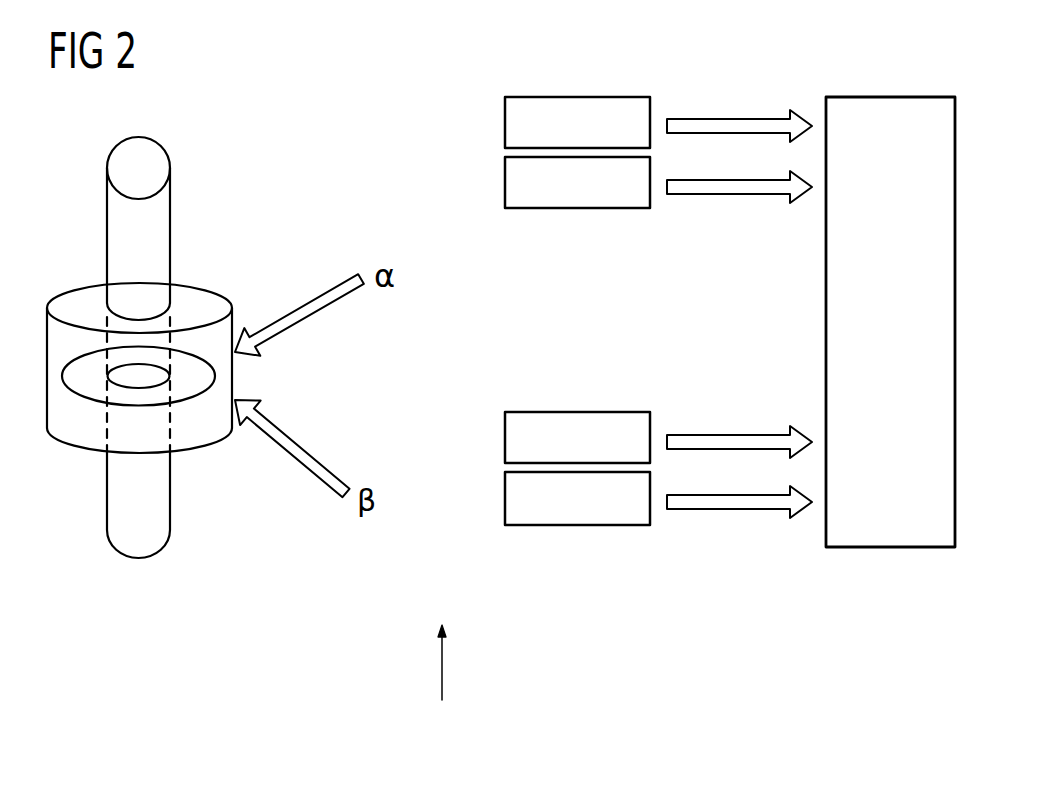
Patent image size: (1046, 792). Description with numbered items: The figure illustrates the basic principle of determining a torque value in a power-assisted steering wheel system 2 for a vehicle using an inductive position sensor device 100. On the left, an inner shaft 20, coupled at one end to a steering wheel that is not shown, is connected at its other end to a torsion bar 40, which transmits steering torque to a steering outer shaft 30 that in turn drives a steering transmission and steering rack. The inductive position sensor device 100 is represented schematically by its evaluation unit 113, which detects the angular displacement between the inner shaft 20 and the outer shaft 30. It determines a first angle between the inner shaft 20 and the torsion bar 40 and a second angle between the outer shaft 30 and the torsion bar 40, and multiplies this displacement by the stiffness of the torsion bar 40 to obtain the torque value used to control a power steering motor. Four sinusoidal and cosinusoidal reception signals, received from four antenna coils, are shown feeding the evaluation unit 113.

The inner shaft 20 is at (107, 233).
The steering outer shaft 30 is at (132, 580).
The torsion bar 40 is at (258, 380).
The inductive position sensor device 100 is at (730, 373).
The evaluation unit 113 is at (852, 322).
The power-assisted steering wheel system 2 is at (441, 687).